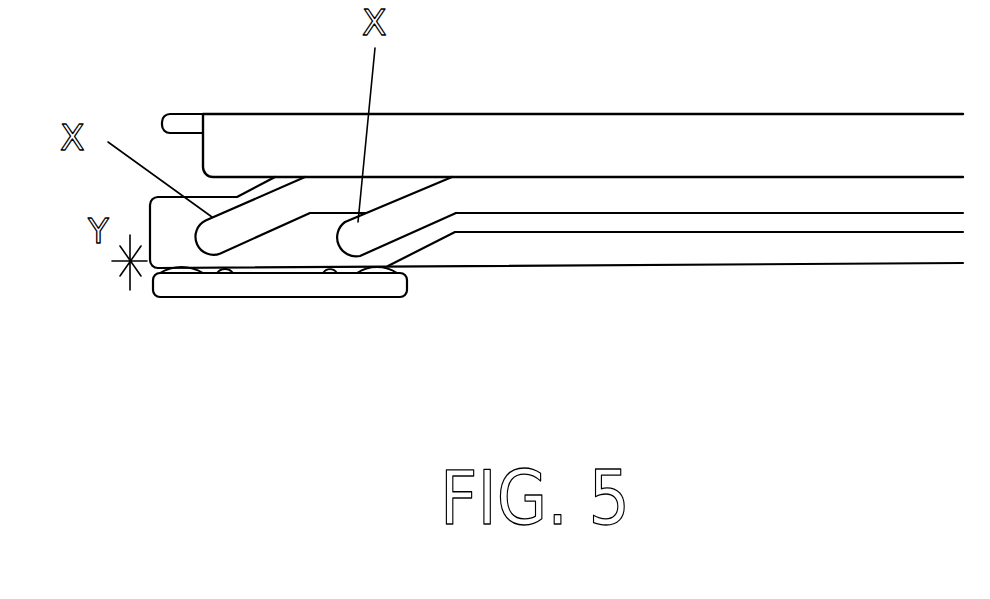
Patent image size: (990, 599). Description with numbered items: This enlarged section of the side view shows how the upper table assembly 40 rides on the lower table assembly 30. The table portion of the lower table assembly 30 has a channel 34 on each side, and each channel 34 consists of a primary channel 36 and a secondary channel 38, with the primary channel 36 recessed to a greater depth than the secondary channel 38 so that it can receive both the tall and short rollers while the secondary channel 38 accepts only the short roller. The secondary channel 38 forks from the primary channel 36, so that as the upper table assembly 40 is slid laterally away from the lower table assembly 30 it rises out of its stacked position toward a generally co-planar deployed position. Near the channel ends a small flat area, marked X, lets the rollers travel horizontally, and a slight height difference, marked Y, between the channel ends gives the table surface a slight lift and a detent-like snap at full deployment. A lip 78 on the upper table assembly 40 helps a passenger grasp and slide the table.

The lower table assembly 30 is at (712, 263).
The channel 34 is at (823, 195).
The primary channel 36 is at (417, 212).
The secondary channel 38 is at (270, 211).
The upper table assembly 40 is at (722, 113).
The lip 78 is at (183, 113).